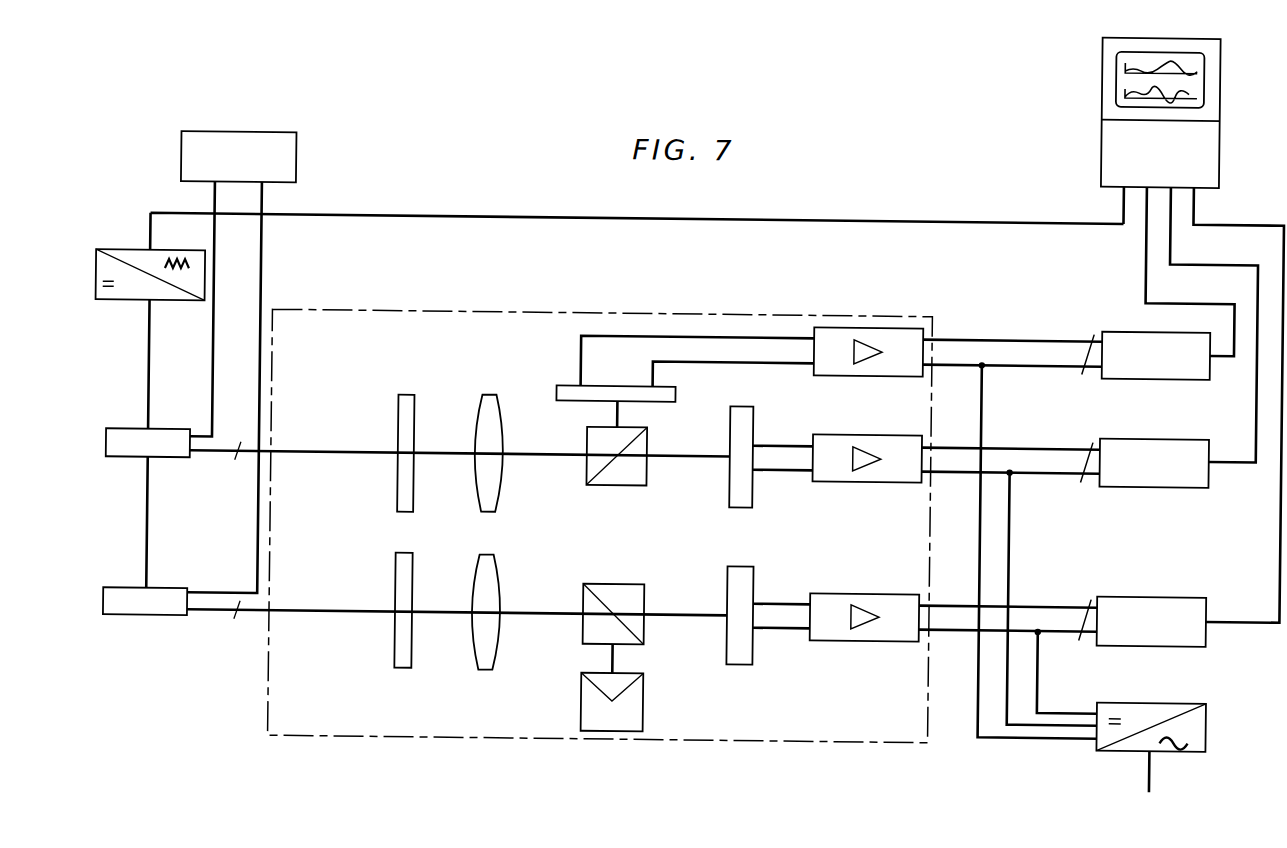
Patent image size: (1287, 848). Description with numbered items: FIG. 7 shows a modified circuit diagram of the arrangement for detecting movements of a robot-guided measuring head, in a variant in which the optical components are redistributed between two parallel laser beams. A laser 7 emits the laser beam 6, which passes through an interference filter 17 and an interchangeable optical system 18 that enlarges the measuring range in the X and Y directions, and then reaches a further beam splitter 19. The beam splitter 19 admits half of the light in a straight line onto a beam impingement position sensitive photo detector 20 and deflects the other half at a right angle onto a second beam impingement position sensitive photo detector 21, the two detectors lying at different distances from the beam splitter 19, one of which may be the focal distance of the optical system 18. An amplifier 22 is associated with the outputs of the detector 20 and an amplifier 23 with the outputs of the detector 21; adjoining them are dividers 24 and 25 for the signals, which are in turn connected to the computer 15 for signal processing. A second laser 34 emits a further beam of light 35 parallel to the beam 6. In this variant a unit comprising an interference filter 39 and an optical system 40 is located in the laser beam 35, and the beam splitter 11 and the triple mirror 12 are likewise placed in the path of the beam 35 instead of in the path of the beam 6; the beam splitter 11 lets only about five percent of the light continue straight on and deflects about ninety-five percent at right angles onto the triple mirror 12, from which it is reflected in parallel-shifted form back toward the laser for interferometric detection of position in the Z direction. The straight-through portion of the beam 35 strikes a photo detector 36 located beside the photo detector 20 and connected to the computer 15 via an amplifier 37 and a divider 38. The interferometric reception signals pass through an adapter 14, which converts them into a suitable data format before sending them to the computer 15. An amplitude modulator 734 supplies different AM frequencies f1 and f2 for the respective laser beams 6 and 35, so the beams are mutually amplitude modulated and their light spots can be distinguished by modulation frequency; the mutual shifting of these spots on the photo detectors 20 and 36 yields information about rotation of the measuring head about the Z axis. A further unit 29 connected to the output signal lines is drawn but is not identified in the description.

The amplitude modulator 734 is at (207, 129).
The adapter 14 is at (125, 247).
The laser 7 is at (130, 427).
The laser 34 is at (133, 586).
The laser beam 6 is at (235, 442).
The further beam of light 35 is at (228, 609).
The AM frequency f1 is at (216, 363).
The AM frequency f2 is at (266, 260).
The interference filter 17 is at (414, 390).
The interchangeable optical system 18 is at (492, 390).
The beam impingement position sensitive photo detector 21 is at (574, 379).
The further beam splitter 19 is at (620, 480).
The beam impingement position sensitive photo detector 20 is at (745, 398).
The amplifier 23 is at (842, 367).
The amplifier 22 is at (889, 425).
The interference filter 39 is at (406, 548).
The optical system 40 is at (491, 549).
The beam splitter 11 is at (608, 577).
The triple mirror 12 is at (601, 666).
The photo detector 36 is at (747, 558).
The amplifier 37 is at (846, 584).
The computer 15 is at (1103, 37).
The divider 25 is at (1146, 319).
The divider 24 is at (1138, 426).
The divider 38 is at (1137, 584).
The AC power supply / converter 29 is at (1137, 690).